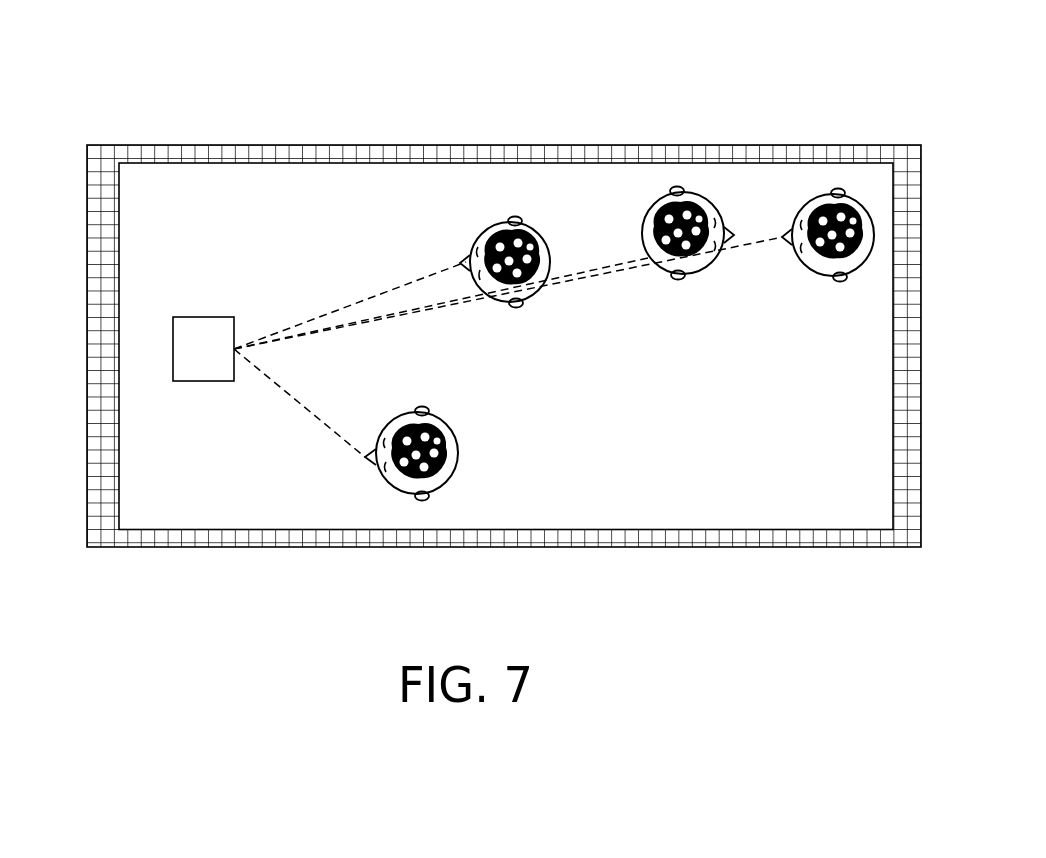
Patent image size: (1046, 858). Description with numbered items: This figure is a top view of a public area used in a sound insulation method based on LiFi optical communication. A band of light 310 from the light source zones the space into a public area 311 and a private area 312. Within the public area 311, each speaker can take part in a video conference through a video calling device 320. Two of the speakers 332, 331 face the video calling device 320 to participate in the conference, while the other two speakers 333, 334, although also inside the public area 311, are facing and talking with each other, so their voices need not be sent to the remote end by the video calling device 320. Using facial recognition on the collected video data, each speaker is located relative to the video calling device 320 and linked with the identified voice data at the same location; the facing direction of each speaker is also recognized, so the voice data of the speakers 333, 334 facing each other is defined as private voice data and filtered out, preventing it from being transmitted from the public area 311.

The band of light 310 is at (200, 145).
The public area 311 is at (133, 258).
The private area 312 is at (347, 115).
The video calling device 320 is at (172, 350).
The speaker 331 is at (485, 216).
The speaker 332 is at (400, 495).
The speaker 333 is at (652, 205).
The speaker 334 is at (807, 198).